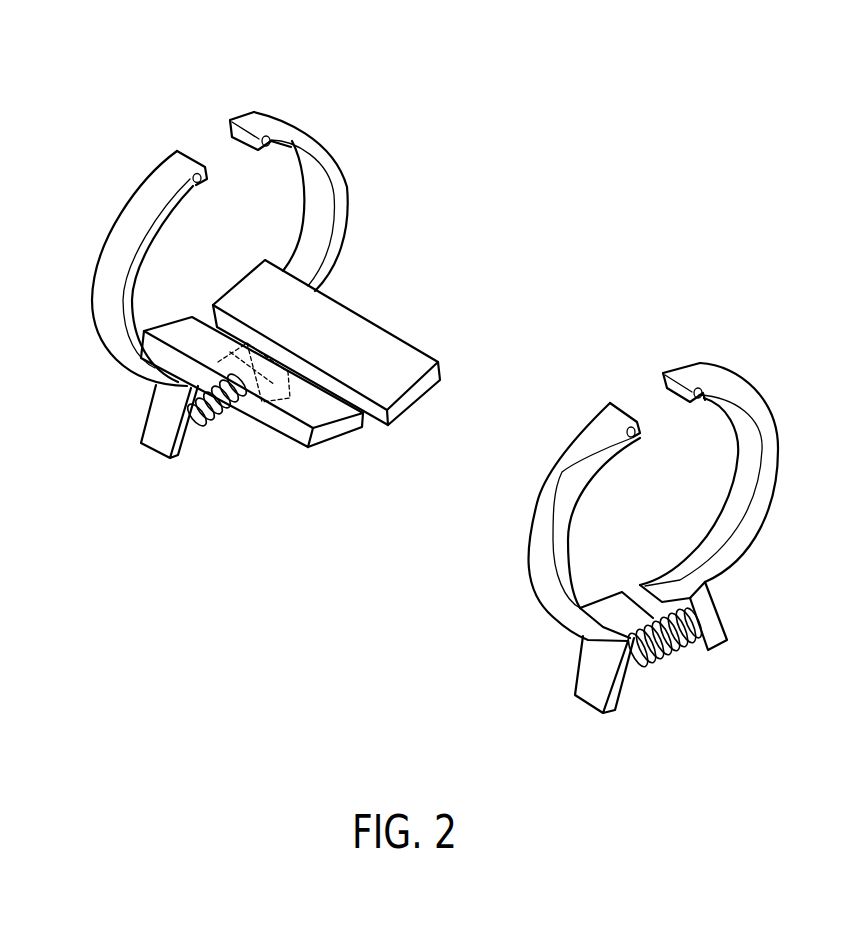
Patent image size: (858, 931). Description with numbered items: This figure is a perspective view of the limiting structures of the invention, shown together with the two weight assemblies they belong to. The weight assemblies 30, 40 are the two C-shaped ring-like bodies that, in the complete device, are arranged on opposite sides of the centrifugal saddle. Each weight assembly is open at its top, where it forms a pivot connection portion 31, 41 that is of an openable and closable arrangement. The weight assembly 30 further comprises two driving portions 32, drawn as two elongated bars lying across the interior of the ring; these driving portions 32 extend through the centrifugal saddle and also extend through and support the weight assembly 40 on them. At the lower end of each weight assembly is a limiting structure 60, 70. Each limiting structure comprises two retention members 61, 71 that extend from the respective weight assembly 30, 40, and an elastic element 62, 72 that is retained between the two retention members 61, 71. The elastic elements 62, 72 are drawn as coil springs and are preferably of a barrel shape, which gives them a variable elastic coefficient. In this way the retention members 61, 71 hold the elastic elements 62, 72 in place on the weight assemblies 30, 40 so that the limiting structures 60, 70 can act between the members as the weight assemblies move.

The weight assembly 30 is at (320, 133).
The pivot connection portion 31 is at (290, 130).
The driving portions 32 is at (310, 410).
The weight assembly 40 is at (767, 400).
The pivot connection portion 41 is at (713, 392).
The limiting structure 60 is at (182, 467).
The retention members 61 is at (160, 412).
The elastic element 62 is at (221, 420).
The limiting structure 70 is at (617, 712).
The retention members 71 is at (593, 663).
The elastic element 72 is at (668, 668).